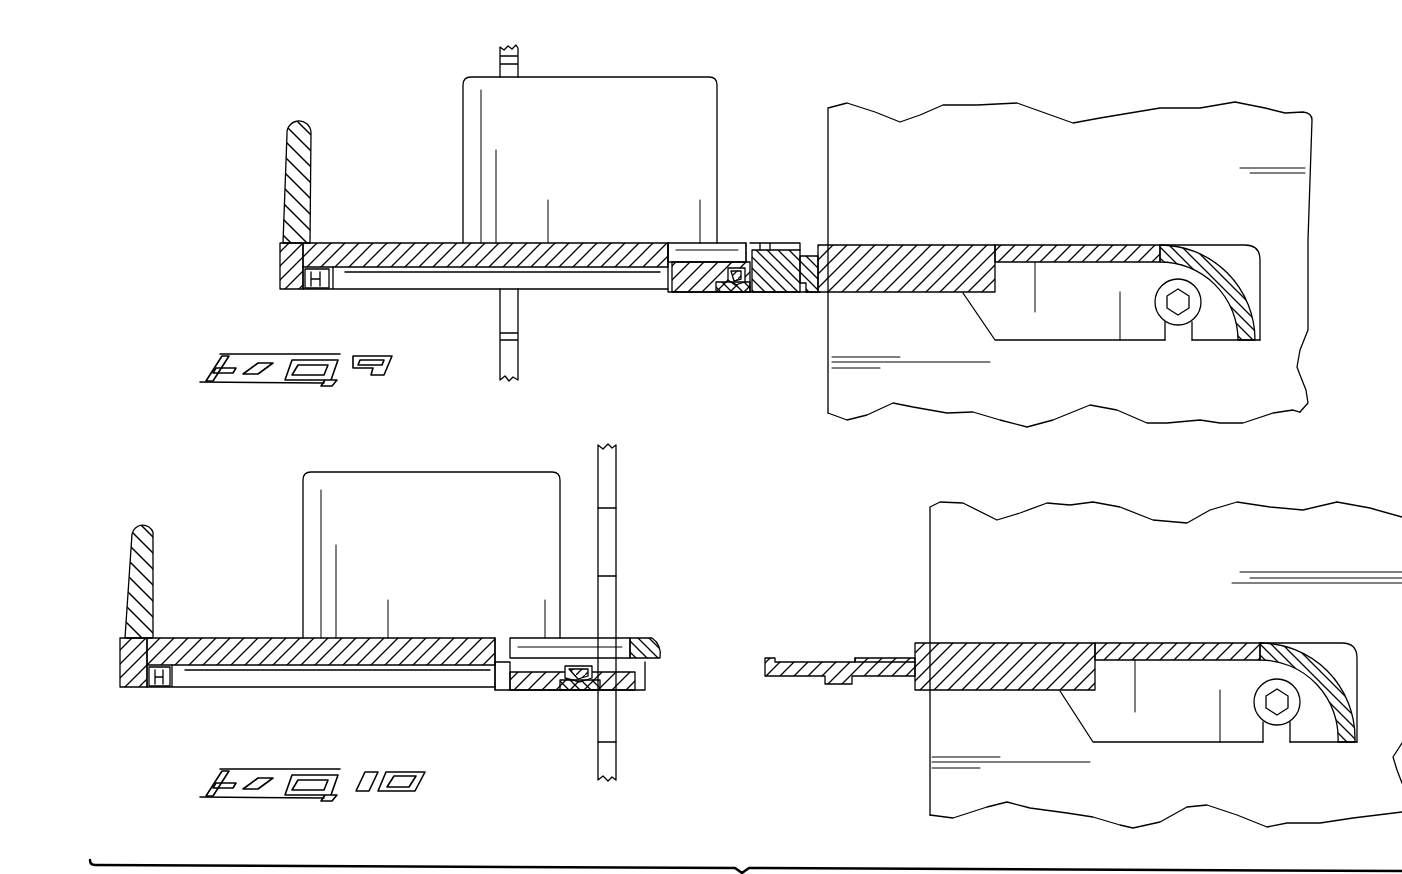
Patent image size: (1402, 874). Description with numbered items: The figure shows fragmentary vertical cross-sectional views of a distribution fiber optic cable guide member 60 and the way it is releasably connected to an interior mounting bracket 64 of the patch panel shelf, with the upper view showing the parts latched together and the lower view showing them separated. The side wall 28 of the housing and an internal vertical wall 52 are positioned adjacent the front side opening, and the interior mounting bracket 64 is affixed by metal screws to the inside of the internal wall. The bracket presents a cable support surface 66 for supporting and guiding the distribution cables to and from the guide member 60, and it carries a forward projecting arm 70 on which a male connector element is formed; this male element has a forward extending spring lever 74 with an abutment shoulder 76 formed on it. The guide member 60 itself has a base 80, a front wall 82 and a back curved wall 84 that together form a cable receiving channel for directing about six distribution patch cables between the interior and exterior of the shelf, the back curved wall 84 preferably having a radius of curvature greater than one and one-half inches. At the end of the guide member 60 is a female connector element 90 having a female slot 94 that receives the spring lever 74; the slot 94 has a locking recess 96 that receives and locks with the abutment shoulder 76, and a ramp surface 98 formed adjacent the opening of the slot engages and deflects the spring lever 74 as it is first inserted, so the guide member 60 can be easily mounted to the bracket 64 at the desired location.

In FIG. 9, the side wall 28 is at (968, 184).
In FIG. 10, the side wall 28 is at (1069, 584).
In FIG. 9, the internal vertical wall 52 is at (510, 360).
In FIG. 10, the internal vertical wall 52 is at (612, 546).
In FIG. 9, the distribution fiber optic cable guide member 60 is at (268, 181).
In FIG. 10, the distribution fiber optic cable guide member 60 is at (120, 487).
In FIG. 9, the interior mounting bracket 64 is at (862, 243).
In FIG. 10, the interior mounting bracket 64 is at (963, 641).
In FIG. 9, the cable support surface 66 is at (1040, 245).
In FIG. 10, the cable support surface 66 is at (1140, 643).
In FIG. 9, the forward projecting arm 70 is at (808, 292).
In FIG. 10, the forward projecting arm 70 is at (804, 656).
In FIG. 9, the spring lever 74 is at (682, 264).
In FIG. 10, the spring lever 74 is at (781, 678).
In FIG. 9, the abutment shoulder 76 is at (760, 262).
In FIG. 10, the abutment shoulder 76 is at (866, 658).
In FIG. 9, the base 80 is at (358, 256).
In FIG. 10, the base 80 is at (203, 655).
In FIG. 9, the front wall 82 is at (300, 152).
In FIG. 10, the front wall 82 is at (140, 547).
In FIG. 9, the back curved wall 84 is at (595, 130).
In FIG. 10, the back curved wall 84 is at (436, 530).
In FIG. 9, the female connector element 90 is at (672, 293).
In FIG. 10, the female connector element 90 is at (515, 692).
In FIG. 9, the female slot 94 is at (736, 265).
In FIG. 10, the female slot 94 is at (586, 656).
In FIG. 9, the locking recess 96 is at (740, 284).
In FIG. 10, the locking recess 96 is at (575, 690).
In FIG. 10, the ramp surface 98 is at (648, 661).